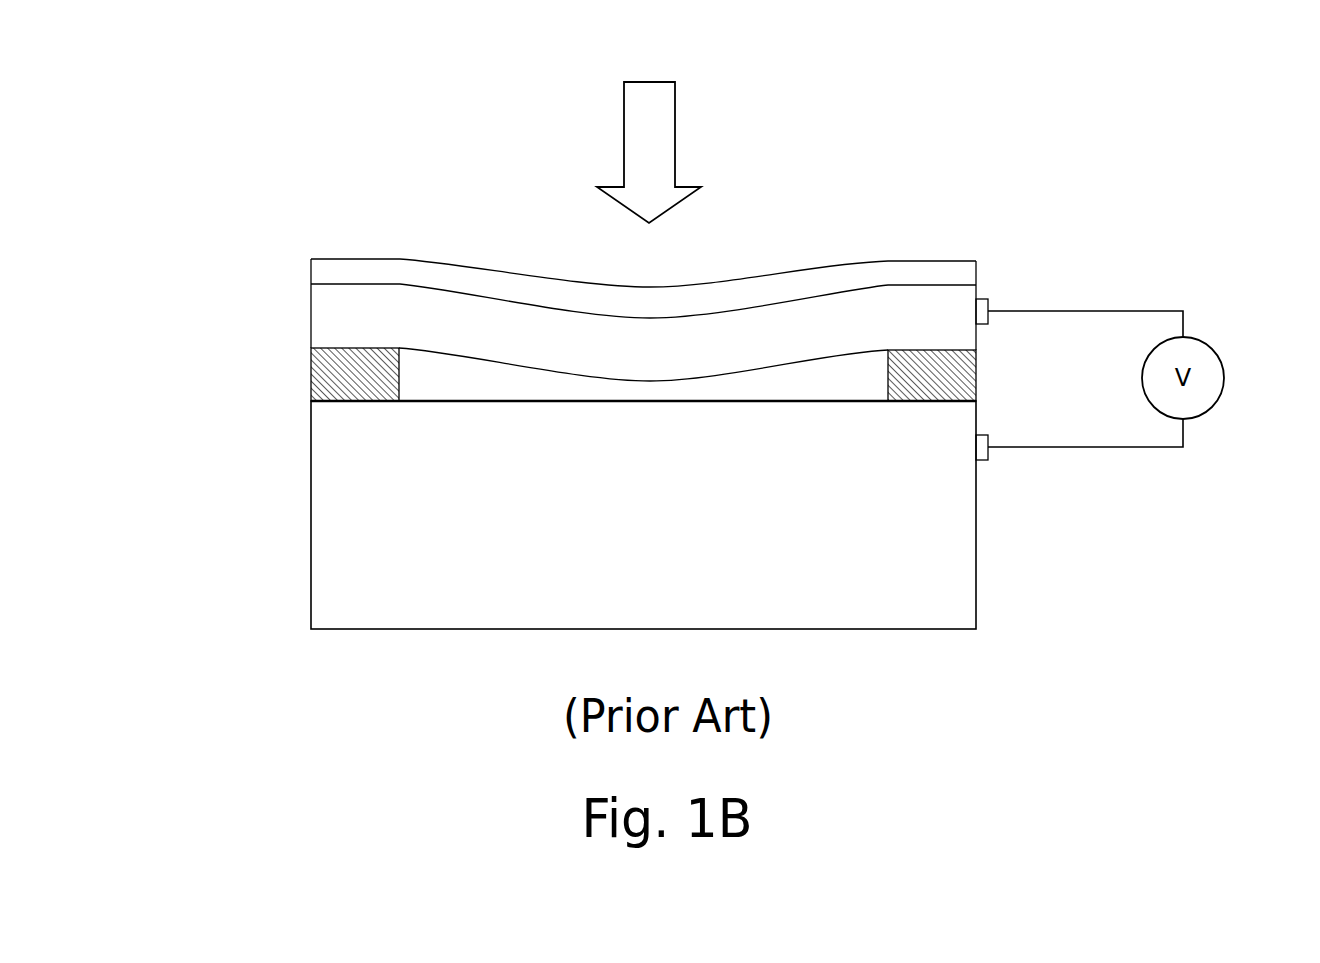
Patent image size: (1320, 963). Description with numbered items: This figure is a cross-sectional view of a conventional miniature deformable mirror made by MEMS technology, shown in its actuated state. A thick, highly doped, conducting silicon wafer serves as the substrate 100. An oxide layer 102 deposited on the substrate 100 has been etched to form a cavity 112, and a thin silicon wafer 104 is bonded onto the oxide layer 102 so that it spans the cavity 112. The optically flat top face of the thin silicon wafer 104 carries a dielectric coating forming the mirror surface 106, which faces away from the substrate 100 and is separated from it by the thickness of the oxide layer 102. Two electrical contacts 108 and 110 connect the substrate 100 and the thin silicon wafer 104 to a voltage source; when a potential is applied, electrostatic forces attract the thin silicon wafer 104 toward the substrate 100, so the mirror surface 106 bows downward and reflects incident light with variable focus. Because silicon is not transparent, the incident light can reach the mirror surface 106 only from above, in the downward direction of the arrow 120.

The substrate 100 is at (348, 502).
The oxide layer 102 is at (315, 382).
The thin silicon wafer 104 is at (335, 323).
The mirror surface 106 is at (335, 272).
The electrical contact 108 is at (983, 452).
The electrical contact 110 is at (979, 302).
The cavity 112 is at (800, 387).
The arrow 120 is at (675, 100).